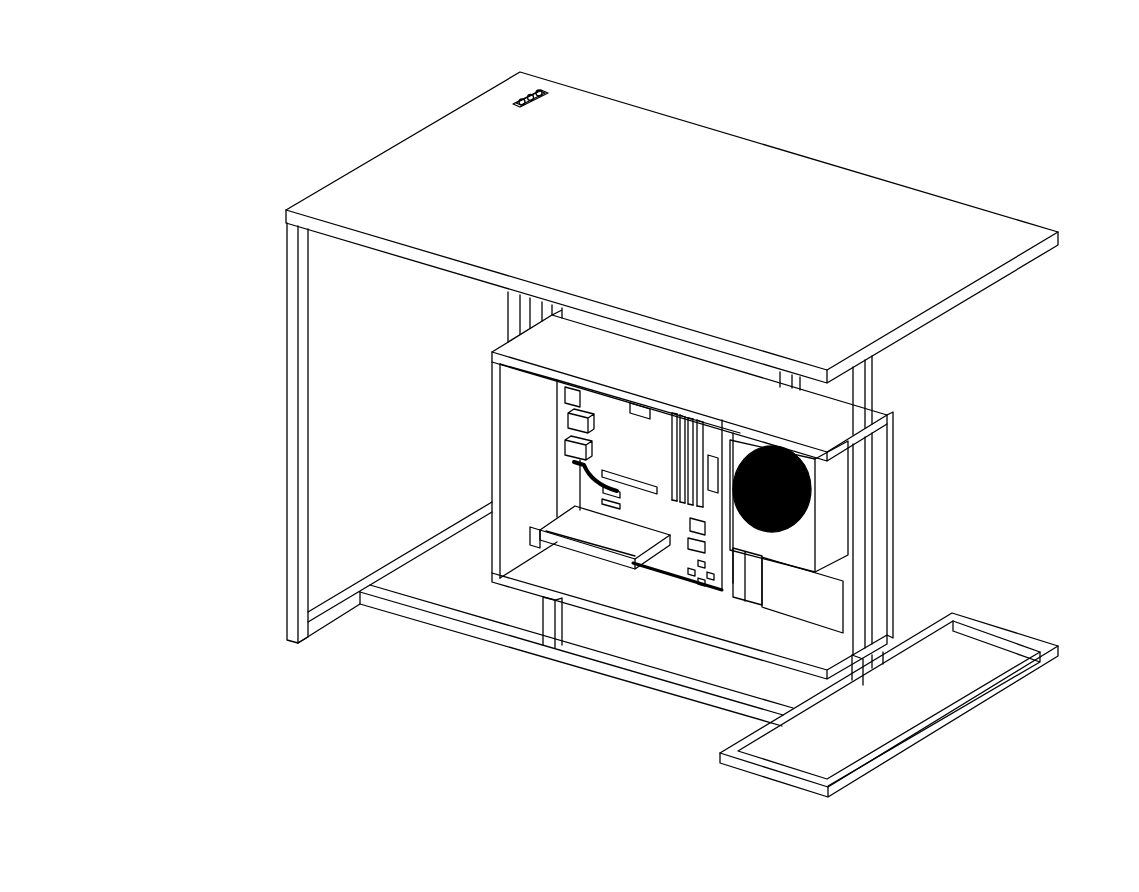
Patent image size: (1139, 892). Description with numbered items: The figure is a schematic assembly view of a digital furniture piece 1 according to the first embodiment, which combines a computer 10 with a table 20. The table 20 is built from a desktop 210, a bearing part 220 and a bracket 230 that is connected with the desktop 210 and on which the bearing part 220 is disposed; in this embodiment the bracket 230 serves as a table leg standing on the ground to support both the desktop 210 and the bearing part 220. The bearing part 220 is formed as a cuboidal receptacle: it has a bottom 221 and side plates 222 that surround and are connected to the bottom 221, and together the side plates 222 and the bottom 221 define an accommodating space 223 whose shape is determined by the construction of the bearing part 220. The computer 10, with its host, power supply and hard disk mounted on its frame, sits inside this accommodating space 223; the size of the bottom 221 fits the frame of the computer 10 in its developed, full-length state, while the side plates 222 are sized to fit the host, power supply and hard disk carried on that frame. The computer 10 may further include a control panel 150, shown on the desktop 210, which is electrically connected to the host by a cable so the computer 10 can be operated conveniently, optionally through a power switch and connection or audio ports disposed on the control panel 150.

The digital furniture piece 1 is at (1092, 72).
The computer 10 is at (645, 588).
The table 20 is at (318, 134).
The control panel 150 is at (533, 86).
The desktop 210 is at (855, 186).
The bearing part 220 is at (478, 447).
The bottom 221 is at (893, 519).
The side plates 222 is at (876, 414).
The accommodating space 223 is at (522, 419).
The bracket 230 is at (288, 576).